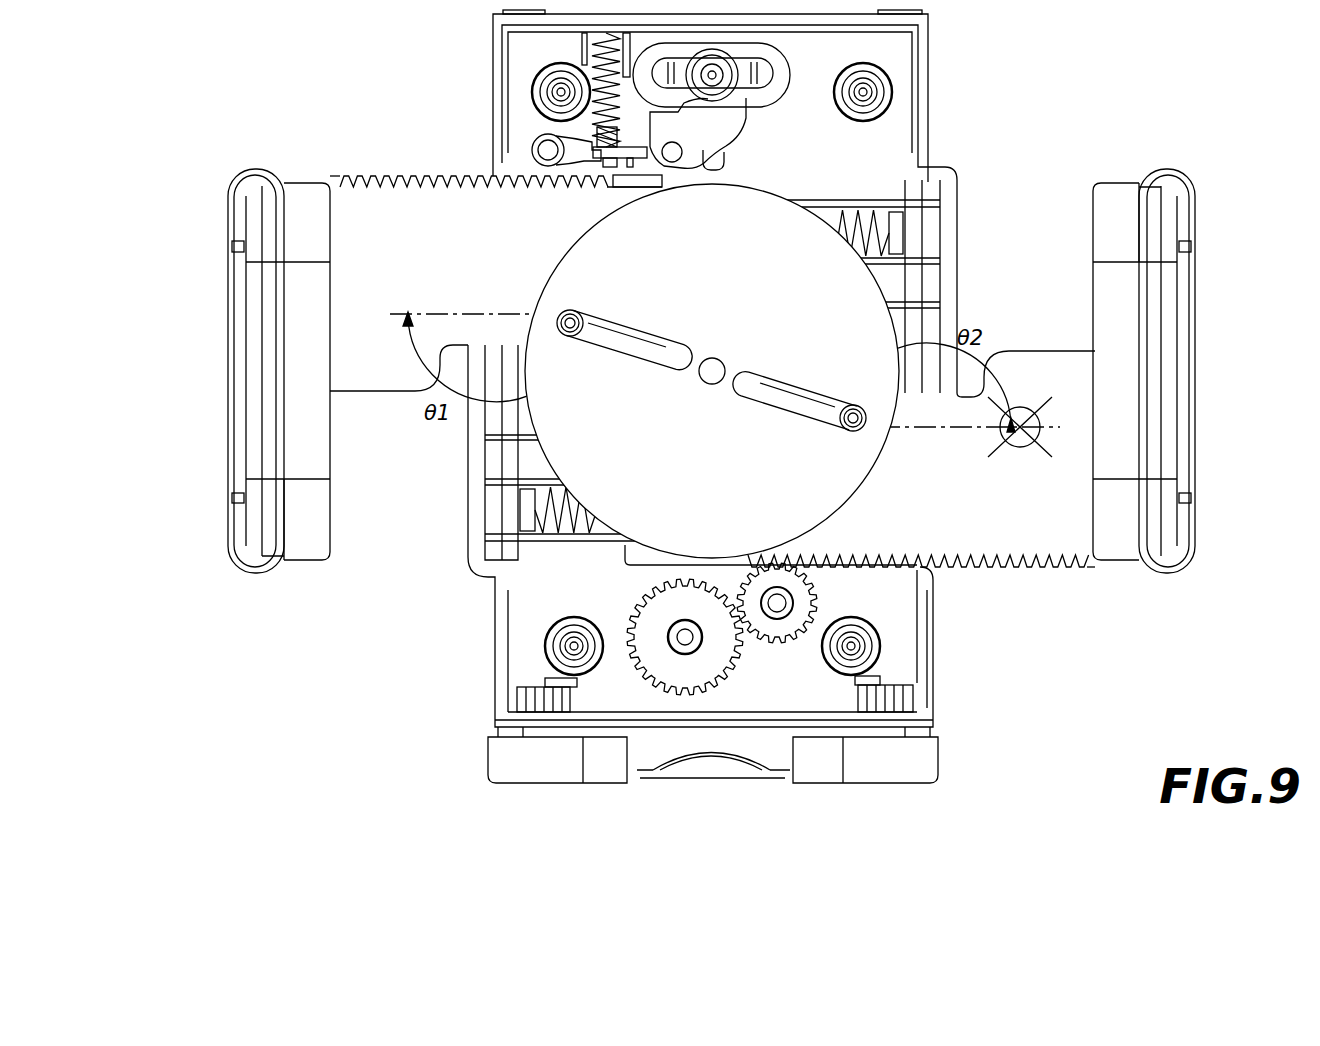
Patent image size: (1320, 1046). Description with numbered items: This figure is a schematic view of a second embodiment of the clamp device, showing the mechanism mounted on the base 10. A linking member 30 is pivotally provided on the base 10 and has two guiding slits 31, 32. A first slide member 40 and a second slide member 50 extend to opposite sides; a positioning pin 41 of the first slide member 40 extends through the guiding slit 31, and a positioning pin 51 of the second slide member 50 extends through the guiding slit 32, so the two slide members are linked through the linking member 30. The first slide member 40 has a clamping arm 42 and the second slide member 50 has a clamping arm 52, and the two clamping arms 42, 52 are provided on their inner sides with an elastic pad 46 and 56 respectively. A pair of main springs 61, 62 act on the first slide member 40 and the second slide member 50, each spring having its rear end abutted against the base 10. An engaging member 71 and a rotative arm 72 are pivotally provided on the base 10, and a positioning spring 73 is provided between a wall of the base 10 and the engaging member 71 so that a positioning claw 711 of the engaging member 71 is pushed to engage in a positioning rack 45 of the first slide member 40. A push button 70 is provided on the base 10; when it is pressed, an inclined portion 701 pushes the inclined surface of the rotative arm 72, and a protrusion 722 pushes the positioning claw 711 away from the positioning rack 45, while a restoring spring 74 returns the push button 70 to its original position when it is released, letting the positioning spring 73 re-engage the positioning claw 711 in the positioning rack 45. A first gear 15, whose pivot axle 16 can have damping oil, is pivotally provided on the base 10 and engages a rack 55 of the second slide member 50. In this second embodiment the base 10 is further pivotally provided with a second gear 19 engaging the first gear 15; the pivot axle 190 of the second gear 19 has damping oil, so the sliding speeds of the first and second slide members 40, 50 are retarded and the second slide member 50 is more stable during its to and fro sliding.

The base 10 is at (930, 660).
The first gear 15 is at (789, 640).
The pivot axle 16 is at (775, 620).
The second gear 19 is at (730, 673).
The pivot axle 190 is at (683, 652).
The linking member 30 is at (601, 468).
The guiding slit 31 is at (655, 358).
The guiding slit 32 is at (768, 377).
The first slide member 40 is at (232, 208).
The positioning pin 41 is at (575, 318).
The clamping arm 42 is at (267, 343).
The positioning rack 45 is at (375, 177).
The elastic pad 46 is at (298, 528).
The second slide member 50 is at (1195, 530).
The positioning pin 51 is at (845, 428).
The clamping arm 52 is at (1157, 372).
The rack 55 is at (842, 568).
The elastic pad 56 is at (1120, 228).
The main spring 61 is at (858, 203).
The main spring 62 is at (555, 517).
The push button 70 is at (780, 61).
The inclined portion 701 is at (727, 153).
The engaging member 71 is at (537, 137).
The positioning claw 711 is at (600, 181).
The rotative arm 72 is at (738, 117).
The protrusion 722 is at (638, 148).
The positioning spring 73 is at (597, 53).
The restoring spring 74 is at (725, 85).